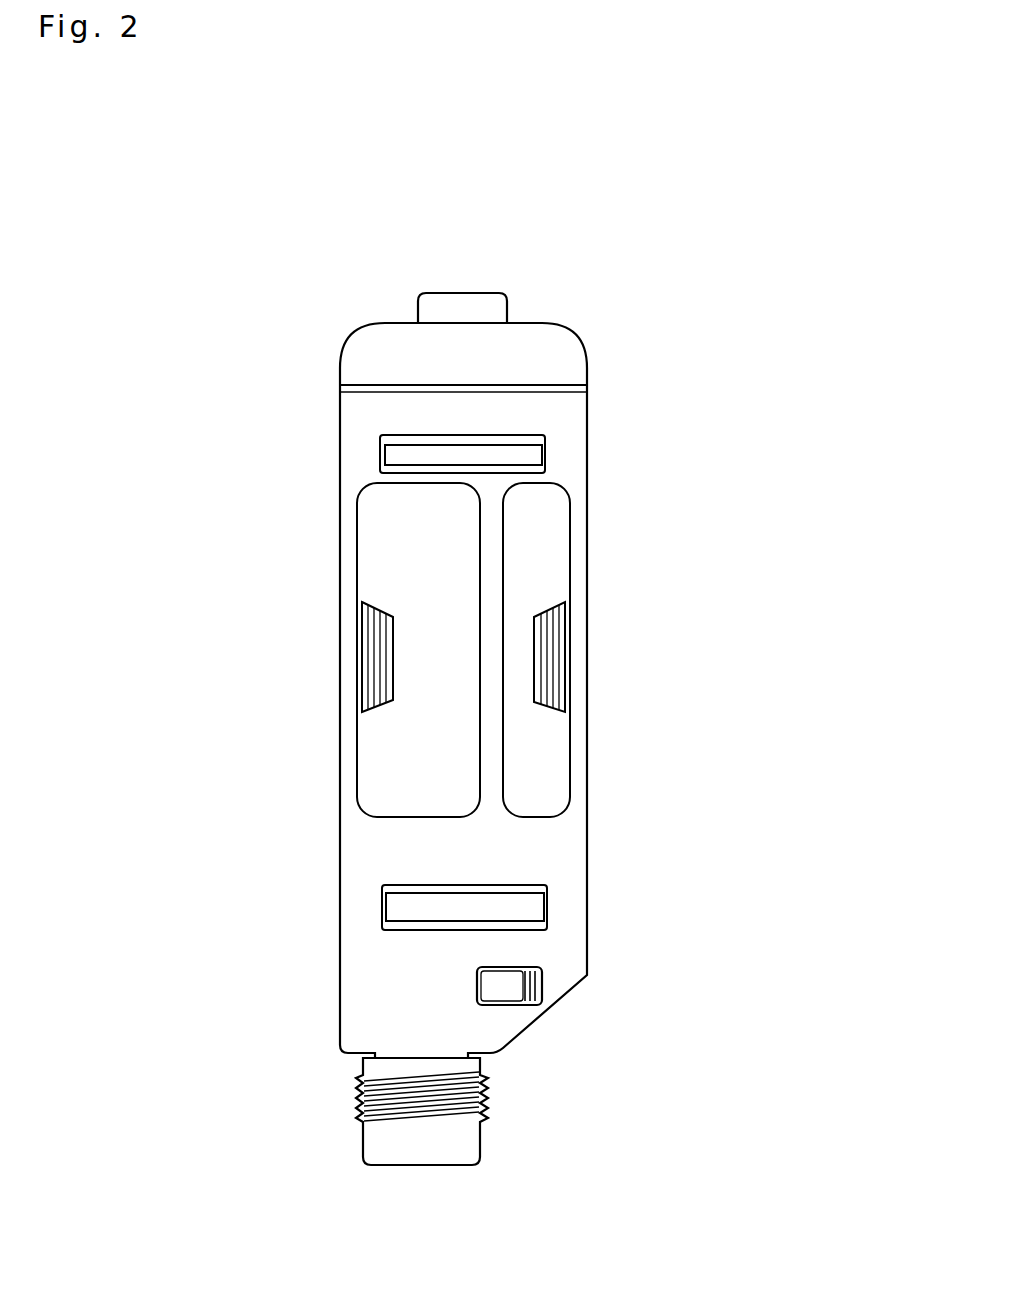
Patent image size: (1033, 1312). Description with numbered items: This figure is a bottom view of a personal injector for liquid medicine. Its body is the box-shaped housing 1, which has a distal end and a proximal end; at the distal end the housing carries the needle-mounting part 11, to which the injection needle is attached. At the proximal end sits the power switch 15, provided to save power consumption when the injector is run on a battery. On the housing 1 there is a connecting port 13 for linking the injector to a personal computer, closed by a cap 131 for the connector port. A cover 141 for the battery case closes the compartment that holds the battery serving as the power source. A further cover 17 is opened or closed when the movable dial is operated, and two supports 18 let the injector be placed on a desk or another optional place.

The housing 1 is at (384, 690).
The needle-mounting part 11 is at (371, 1138).
The connecting port 13 is at (594, 973).
The cap for connector port 131 is at (595, 1021).
The cover for battery case 141 is at (636, 657).
The power switch 15 is at (517, 271).
The cover 17 is at (295, 676).
The support 18 is at (546, 660).